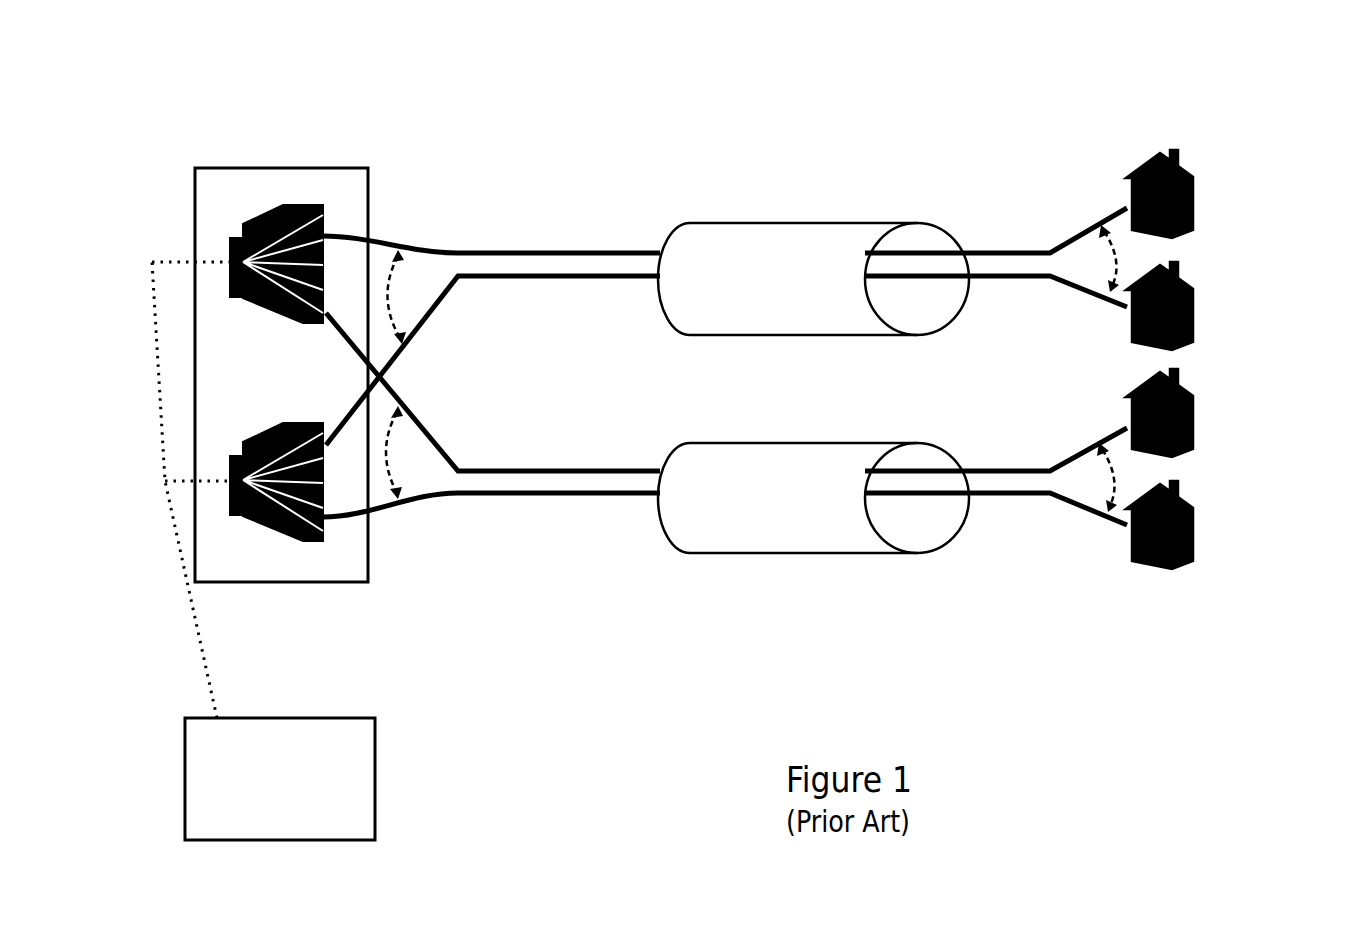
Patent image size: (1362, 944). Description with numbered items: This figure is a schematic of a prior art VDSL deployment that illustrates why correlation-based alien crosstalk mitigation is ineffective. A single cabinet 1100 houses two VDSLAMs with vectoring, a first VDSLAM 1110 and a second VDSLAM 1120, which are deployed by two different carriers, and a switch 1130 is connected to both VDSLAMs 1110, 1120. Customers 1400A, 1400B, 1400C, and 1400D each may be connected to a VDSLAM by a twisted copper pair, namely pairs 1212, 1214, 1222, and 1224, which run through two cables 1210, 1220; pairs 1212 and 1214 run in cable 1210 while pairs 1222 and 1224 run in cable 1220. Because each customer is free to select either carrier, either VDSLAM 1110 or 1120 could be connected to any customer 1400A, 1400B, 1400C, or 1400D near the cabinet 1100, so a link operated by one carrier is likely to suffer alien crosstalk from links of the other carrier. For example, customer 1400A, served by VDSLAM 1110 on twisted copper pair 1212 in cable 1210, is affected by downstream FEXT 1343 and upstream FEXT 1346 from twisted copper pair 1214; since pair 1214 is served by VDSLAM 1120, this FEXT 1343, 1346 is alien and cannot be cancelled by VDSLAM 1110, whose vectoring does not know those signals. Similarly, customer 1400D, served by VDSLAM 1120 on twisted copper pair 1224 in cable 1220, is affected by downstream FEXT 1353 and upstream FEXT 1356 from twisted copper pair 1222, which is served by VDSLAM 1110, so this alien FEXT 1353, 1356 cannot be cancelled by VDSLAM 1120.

The cabinet 1100 is at (270, 162).
The VDSLAM 1110 is at (303, 200).
The VDSLAM 1120 is at (317, 548).
The switch 1130 is at (377, 752).
The cable 1210 is at (753, 220).
The twisted copper pair 1212 is at (600, 248).
The twisted copper pair 1214 is at (600, 283).
The cable 1220 is at (780, 558).
The twisted copper pair 1222 is at (600, 466).
The twisted copper pair 1224 is at (600, 505).
The downstream FEXT 1343 is at (393, 290).
The downstream FEXT 1353 is at (387, 452).
The upstream FEXT 1346 is at (1107, 263).
The upstream FEXT 1356 is at (1107, 483).
The customer 1400A is at (1197, 193).
The customer 1400B is at (1203, 300).
The customer 1400C is at (1200, 413).
The customer 1400D is at (1200, 530).